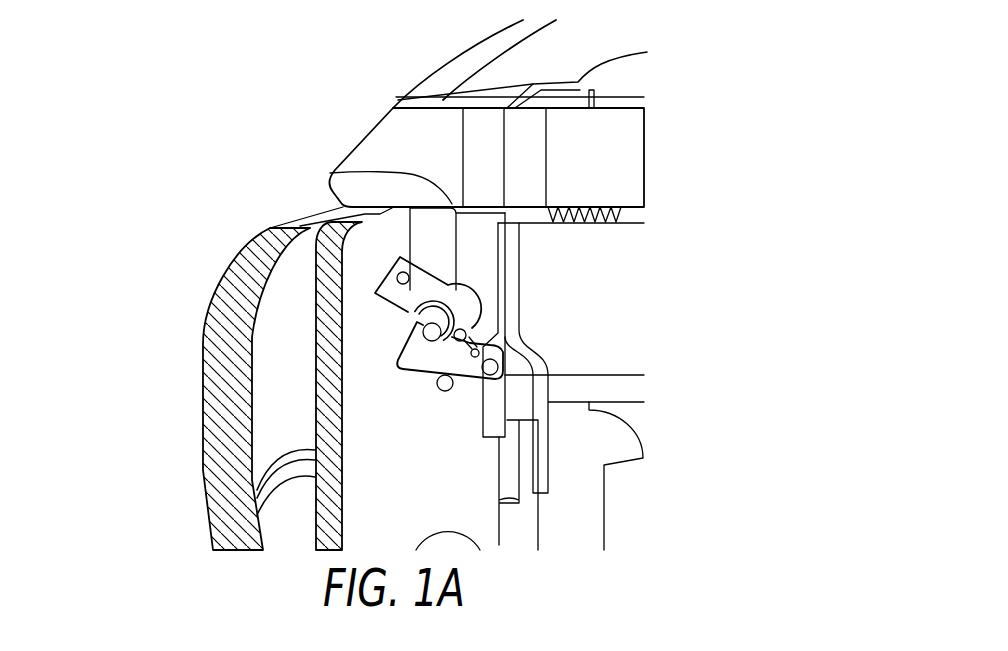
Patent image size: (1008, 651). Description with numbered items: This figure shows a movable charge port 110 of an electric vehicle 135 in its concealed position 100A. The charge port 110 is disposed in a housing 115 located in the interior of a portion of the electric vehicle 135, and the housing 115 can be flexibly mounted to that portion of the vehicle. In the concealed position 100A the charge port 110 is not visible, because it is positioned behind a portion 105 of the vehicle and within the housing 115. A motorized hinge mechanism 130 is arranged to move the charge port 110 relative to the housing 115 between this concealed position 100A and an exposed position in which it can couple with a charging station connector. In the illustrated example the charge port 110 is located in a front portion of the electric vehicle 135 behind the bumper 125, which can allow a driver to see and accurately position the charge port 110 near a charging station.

The concealed position 100A is at (173, 53).
The portion of the vehicle 105 is at (364, 138).
The charge port 110 is at (332, 173).
The housing 115 is at (570, 293).
The bumper 125 is at (240, 270).
The motorized hinge mechanism 130 is at (397, 315).
The electric vehicle 135 is at (664, 27).